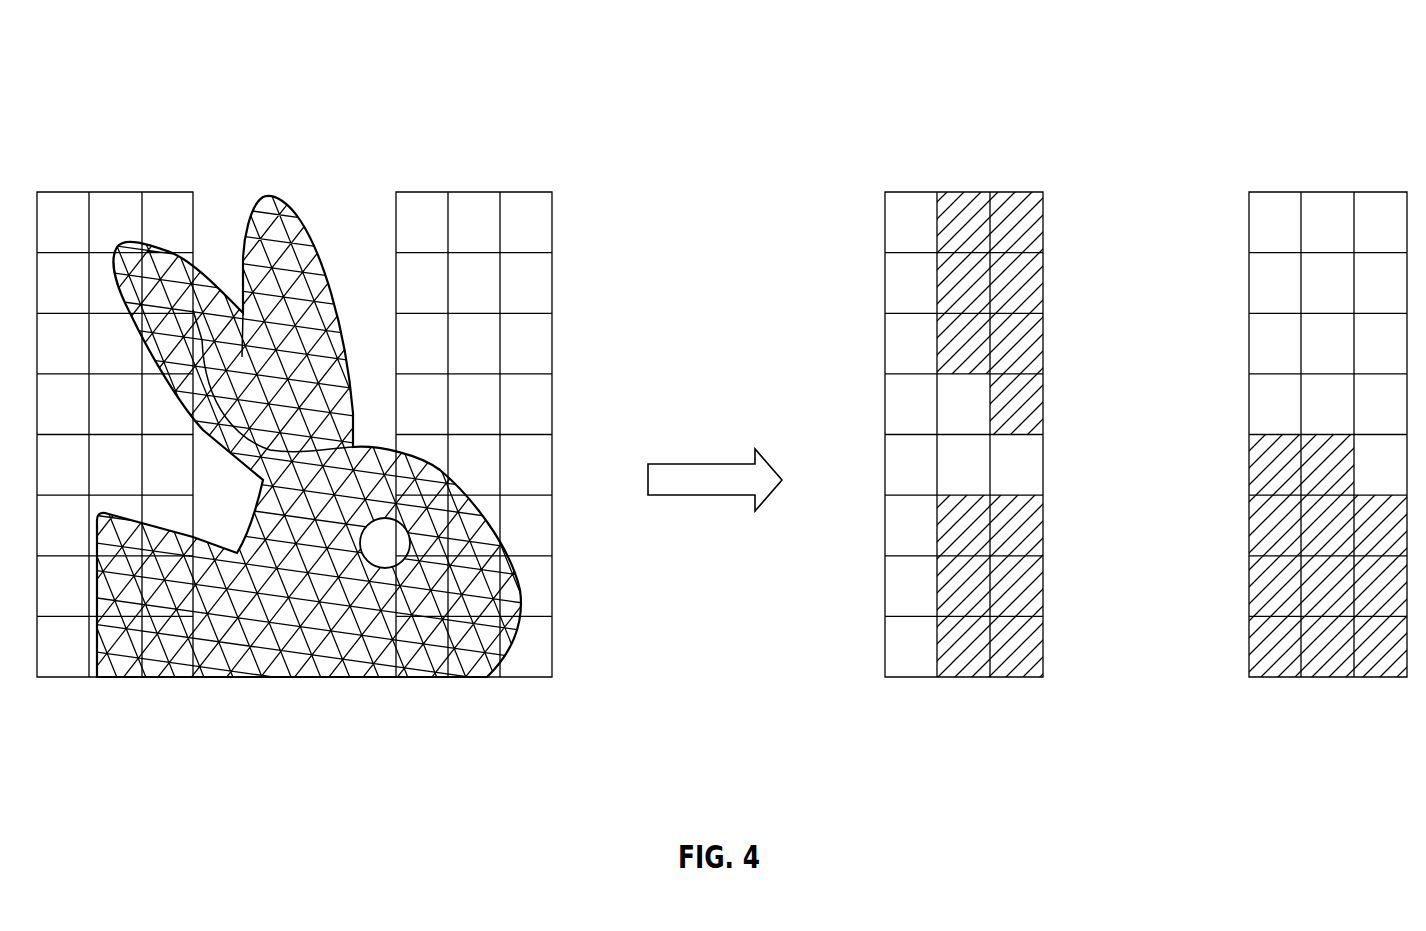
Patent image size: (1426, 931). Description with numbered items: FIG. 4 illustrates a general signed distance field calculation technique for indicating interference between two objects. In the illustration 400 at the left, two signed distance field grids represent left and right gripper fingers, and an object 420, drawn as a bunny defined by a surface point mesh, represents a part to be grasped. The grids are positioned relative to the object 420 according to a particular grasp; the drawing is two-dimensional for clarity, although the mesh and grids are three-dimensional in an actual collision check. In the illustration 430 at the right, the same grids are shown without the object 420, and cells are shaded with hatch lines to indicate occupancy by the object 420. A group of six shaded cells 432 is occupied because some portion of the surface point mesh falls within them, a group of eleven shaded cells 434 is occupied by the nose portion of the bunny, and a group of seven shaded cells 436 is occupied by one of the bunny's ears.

The illustration 400 is at (558, 70).
The object 420 is at (266, 197).
The illustration 430 is at (1407, 70).
The group of six grid cells 432 is at (1055, 493).
The group of eleven grid cells 434 is at (1240, 433).
The group of seven grid cells 436 is at (1062, 192).